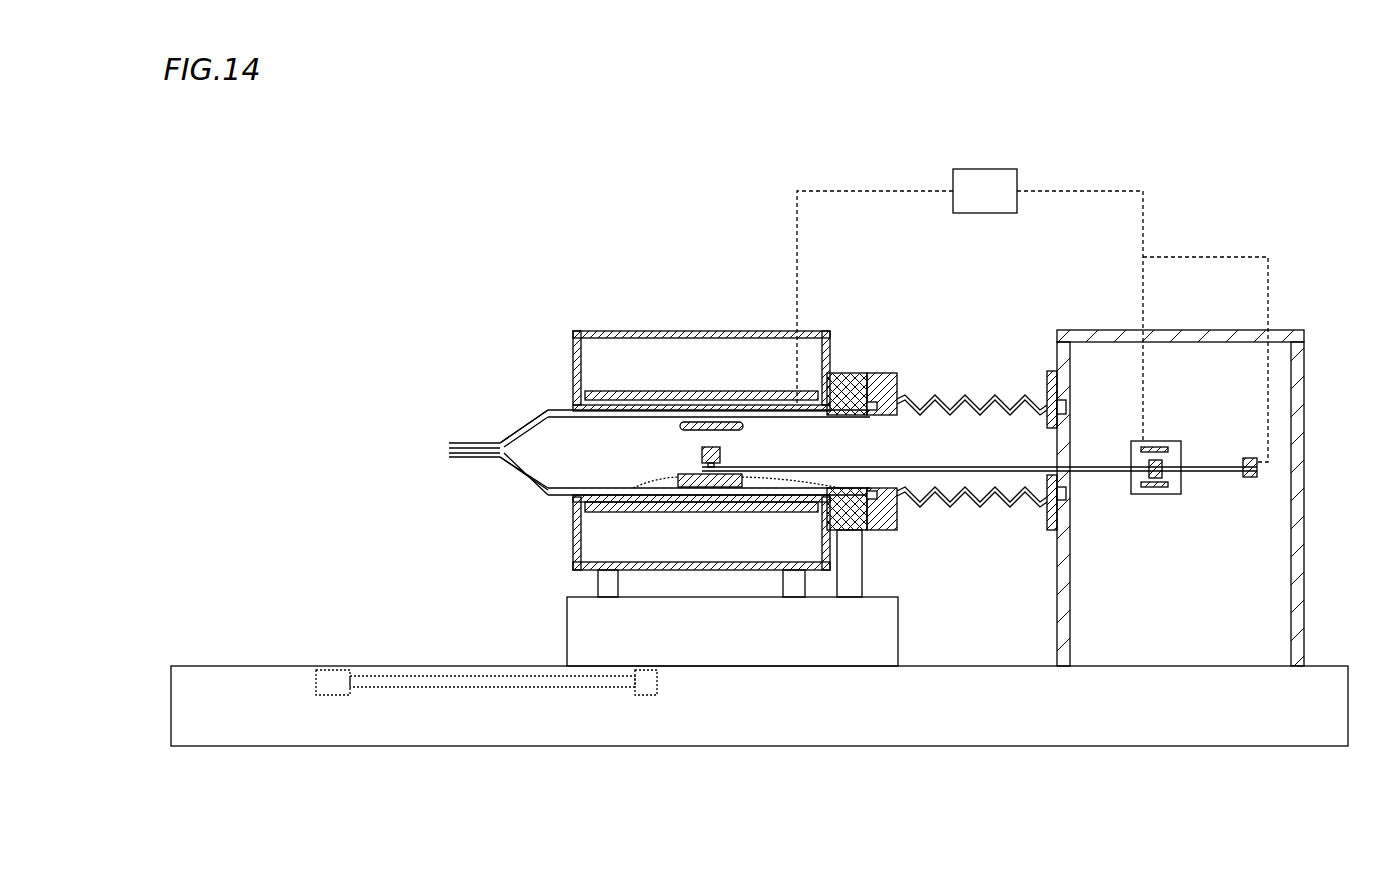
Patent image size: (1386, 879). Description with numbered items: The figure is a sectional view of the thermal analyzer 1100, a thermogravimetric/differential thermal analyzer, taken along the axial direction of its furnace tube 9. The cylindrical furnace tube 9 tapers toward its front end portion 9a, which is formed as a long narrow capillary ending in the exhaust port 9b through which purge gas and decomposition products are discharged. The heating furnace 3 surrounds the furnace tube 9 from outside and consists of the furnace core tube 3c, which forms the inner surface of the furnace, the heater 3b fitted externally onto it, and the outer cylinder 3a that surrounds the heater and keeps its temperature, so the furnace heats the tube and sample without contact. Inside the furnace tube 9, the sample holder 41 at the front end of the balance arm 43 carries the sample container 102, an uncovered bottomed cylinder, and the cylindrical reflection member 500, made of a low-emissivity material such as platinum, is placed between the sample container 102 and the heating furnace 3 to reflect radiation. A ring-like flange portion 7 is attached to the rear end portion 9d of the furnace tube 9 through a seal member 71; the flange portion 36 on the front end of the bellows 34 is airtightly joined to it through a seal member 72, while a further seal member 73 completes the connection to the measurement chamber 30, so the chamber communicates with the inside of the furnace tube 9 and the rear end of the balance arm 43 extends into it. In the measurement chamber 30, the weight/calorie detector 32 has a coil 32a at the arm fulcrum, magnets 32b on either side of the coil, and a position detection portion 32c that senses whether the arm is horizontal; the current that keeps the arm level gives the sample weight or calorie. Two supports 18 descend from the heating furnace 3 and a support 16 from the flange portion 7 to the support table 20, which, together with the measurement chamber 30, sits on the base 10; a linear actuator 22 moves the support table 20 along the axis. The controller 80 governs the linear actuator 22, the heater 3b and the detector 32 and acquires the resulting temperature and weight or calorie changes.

The base 10 is at (1058, 746).
The linear actuator 22 is at (362, 665).
The support table 20 is at (900, 651).
The support 16 is at (862, 568).
The supports 18 is at (792, 590).
The heating furnace 3 is at (685, 406).
The outer cylinder 3a is at (695, 330).
The heater 3b is at (705, 391).
The furnace core tube 3c is at (757, 405).
The furnace tube 9 is at (485, 487).
The front end portion 9a is at (473, 460).
The exhaust port 9b is at (440, 458).
The rear end portion 9d is at (570, 503).
The reflection member 500 is at (743, 426).
The sample container 102 is at (703, 457).
The sample holder 41 is at (724, 456).
The balance arm 43 is at (888, 465).
The flange portion 7 is at (873, 405).
The seal member 71 is at (843, 375).
The seal member 72 is at (880, 373).
The flange portion 36 is at (897, 380).
The bellows 34 is at (965, 398).
The seal member 73 is at (1068, 407).
The measurement chamber 30 is at (1195, 330).
The weight/calorie detector 32 is at (1208, 513).
The coil 32a is at (1165, 475).
The magnets 32b is at (1155, 494).
The position detection portion 32c is at (1250, 477).
The controller 80 is at (993, 169).
The thermal analyzer 1100 is at (1233, 214).